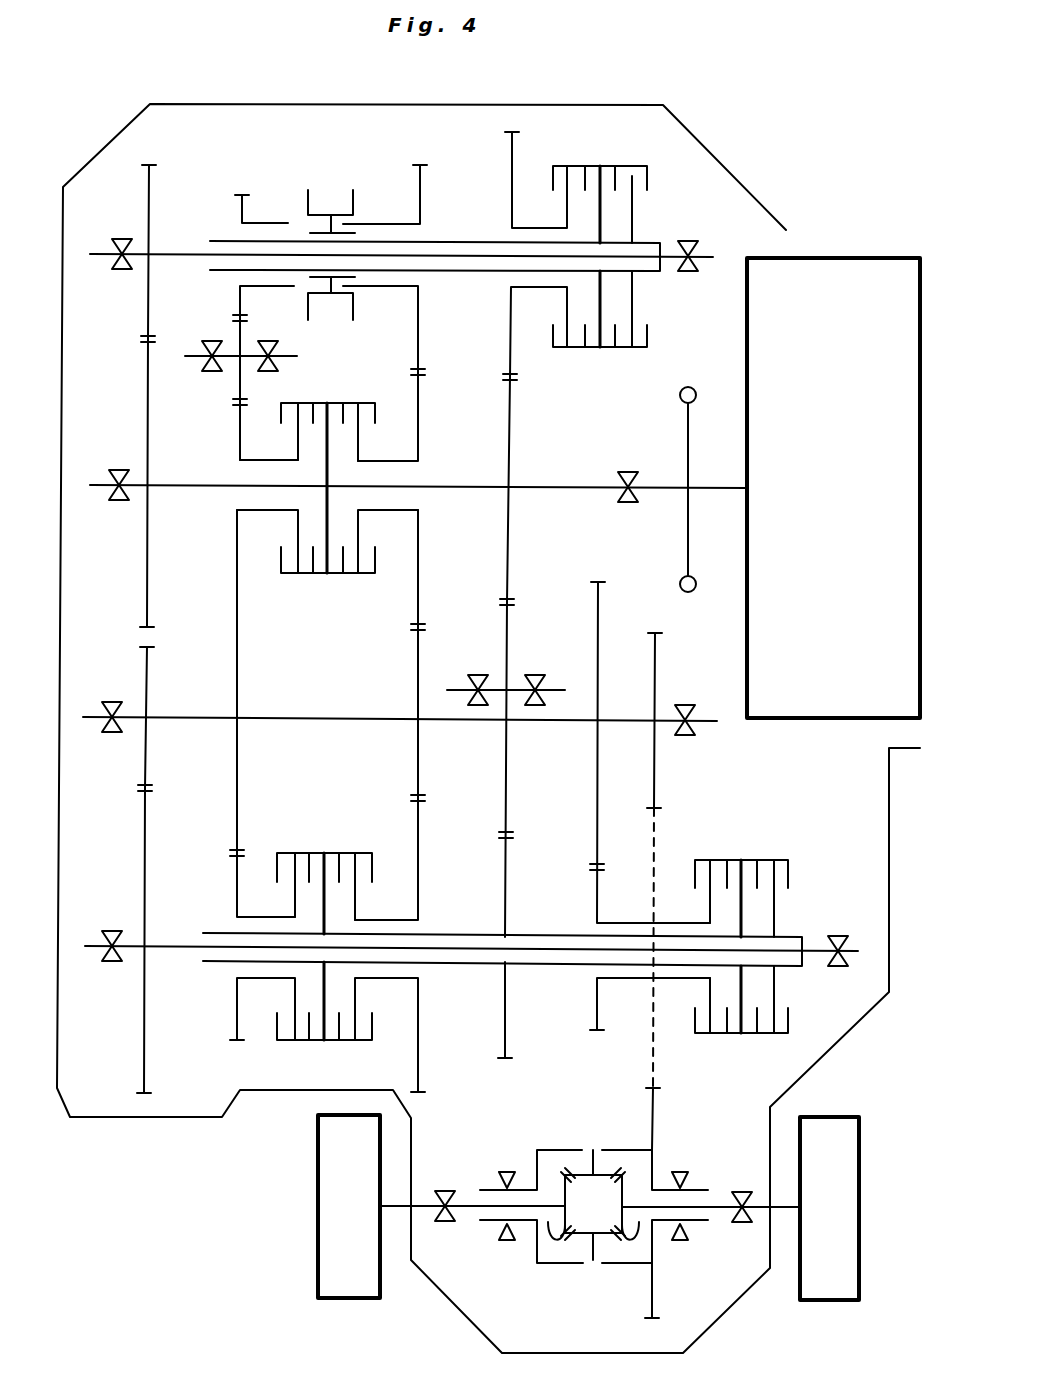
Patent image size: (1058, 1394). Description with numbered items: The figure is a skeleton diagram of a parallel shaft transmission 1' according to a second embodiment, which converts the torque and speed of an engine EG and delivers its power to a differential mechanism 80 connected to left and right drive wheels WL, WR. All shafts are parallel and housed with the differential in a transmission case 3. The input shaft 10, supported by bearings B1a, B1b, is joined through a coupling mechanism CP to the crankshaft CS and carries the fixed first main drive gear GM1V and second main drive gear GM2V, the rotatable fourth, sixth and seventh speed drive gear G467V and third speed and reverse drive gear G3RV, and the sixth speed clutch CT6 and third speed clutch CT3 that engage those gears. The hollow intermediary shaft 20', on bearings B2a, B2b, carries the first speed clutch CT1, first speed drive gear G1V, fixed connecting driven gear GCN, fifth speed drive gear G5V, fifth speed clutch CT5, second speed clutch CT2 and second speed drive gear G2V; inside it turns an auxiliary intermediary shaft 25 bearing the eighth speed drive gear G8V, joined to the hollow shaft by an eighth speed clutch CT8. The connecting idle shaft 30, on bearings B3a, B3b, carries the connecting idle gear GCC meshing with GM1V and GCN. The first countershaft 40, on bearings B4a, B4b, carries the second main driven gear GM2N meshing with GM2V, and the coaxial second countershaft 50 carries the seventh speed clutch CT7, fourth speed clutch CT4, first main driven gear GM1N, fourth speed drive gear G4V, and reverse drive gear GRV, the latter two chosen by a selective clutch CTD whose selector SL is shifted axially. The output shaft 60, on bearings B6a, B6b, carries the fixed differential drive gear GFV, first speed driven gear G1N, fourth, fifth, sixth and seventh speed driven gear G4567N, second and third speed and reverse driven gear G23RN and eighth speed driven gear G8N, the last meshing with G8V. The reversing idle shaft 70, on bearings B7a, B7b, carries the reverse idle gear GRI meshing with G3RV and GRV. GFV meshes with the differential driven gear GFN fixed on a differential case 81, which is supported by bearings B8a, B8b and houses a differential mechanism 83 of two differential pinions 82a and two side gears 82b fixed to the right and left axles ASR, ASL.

The transmission 1' is at (171, 97).
The transmission case 3 is at (108, 150).
The engine EG is at (866, 505).
The input shaft 10 is at (570, 483).
The hollow intermediary shaft 20' is at (502, 926).
The auxiliary intermediary shaft 25 is at (173, 953).
The connecting idle shaft 30 is at (565, 690).
The first countershaft 40 is at (441, 254).
The second countershaft 50 is at (485, 241).
The output shaft 60 is at (325, 716).
The reversing idle shaft 70 is at (297, 358).
The differential mechanism 80 is at (502, 1134).
The differential case 81 is at (560, 1265).
The differential pinion 82a is at (593, 1158).
The side gear 82b is at (545, 1242).
The differential mechanism 83 is at (545, 1150).
The selective clutch CTD is at (330, 180).
The selector SL is at (348, 196).
The crankshaft CS is at (706, 486).
The coupling mechanism CP is at (688, 543).
The first speed clutch CT1 is at (718, 848).
The second speed clutch CT2 is at (292, 842).
The third speed clutch CT3 is at (295, 590).
The fourth speed clutch CT4 is at (568, 158).
The fifth speed clutch CT5 is at (356, 842).
The sixth speed clutch CT6 is at (356, 590).
The seventh speed clutch CT7 is at (624, 158).
The eighth speed clutch CT8 is at (776, 848).
The bearing B1a is at (628, 472).
The bearing B1b is at (119, 470).
The bearing B2a is at (838, 936).
The bearing B2b is at (112, 932).
The bearing B3a is at (535, 675).
The bearing B3b is at (478, 675).
The bearing B4a is at (688, 240).
The bearing B4b is at (122, 240).
The bearing B6a is at (687, 705).
The bearing B6b is at (112, 700).
The bearing B7a is at (268, 341).
The bearing B7b is at (212, 341).
The bearing B8a is at (683, 1175).
The bearing B8b is at (500, 1174).
The reverse drive gear GRV is at (240, 208).
The fourth speed drive gear G4V is at (422, 176).
The first main driven gear GM1N is at (508, 330).
The first main drive gear GM1V is at (508, 445).
The second main driven gear GM2N is at (147, 318).
The second main drive gear GM2V is at (146, 580).
The reverse idle gear GRI is at (237, 396).
The third speed and reverse drive gear G3RV is at (239, 452).
The fourth, sixth and seventh speed drive gear G467V is at (421, 392).
The first speed driven gear G1N is at (600, 625).
The differential drive gear GFV is at (657, 655).
The differential driven gear GFN is at (656, 1105).
The eighth speed driven gear G8N is at (145, 774).
The eighth speed drive gear G8V is at (144, 1018).
The second and third speed and reverse driven gear G23RN is at (235, 797).
The fourth, fifth, sixth and seventh speed driven gear G4567N is at (418, 775).
The fifth speed drive gear G5V is at (421, 868).
The second speed drive gear G2V is at (237, 870).
The connecting idle gear GCC is at (508, 808).
The connecting driven gear GCN is at (504, 1006).
The first speed drive gear G1V is at (596, 1006).
The left axle ASL is at (388, 1212).
The right axle ASR is at (780, 1212).
The left drive wheel WL is at (347, 1302).
The right drive wheel WR is at (832, 1304).